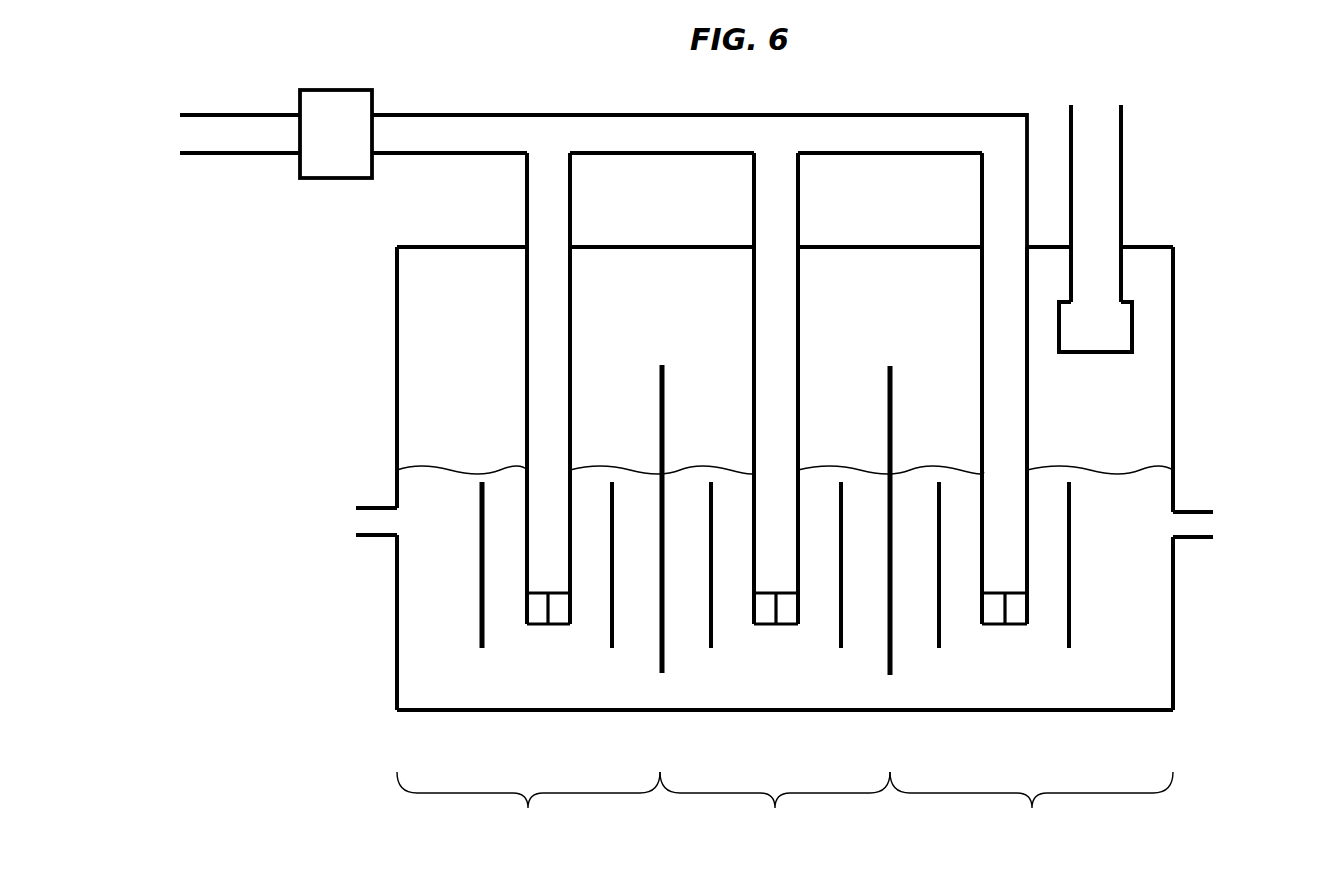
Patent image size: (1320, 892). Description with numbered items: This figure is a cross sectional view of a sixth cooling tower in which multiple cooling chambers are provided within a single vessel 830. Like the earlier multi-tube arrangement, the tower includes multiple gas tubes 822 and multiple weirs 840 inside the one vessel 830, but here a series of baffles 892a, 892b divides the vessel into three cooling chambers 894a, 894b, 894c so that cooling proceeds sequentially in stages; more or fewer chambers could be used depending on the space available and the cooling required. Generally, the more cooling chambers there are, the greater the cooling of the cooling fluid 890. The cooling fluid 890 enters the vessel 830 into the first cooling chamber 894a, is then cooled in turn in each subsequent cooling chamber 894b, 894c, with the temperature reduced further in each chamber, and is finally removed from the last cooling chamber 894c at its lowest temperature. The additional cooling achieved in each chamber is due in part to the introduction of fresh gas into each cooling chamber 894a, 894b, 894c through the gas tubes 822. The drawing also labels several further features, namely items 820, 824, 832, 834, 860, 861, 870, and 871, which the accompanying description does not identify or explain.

The gas supply unit 820 is at (322, 179).
The gas tubes 822 is at (540, 352).
The nozzle 824 is at (528, 612).
The vessel 830 is at (1176, 373).
The outlet port 832 is at (1200, 507).
The inlet port 834 is at (355, 521).
The weirs 840 is at (480, 490).
The drain pipe 860 is at (1102, 183).
The sensor 861 is at (1118, 328).
The anode 870 is at (506, 620).
The cathode 871 is at (440, 632).
The cooling fluid 890 is at (577, 695).
The baffle 892a is at (662, 676).
The baffle 892b is at (890, 677).
The first cooling chamber 894a is at (528, 807).
The second cooling chamber 894b is at (775, 807).
The last cooling chamber 894c is at (1031, 807).